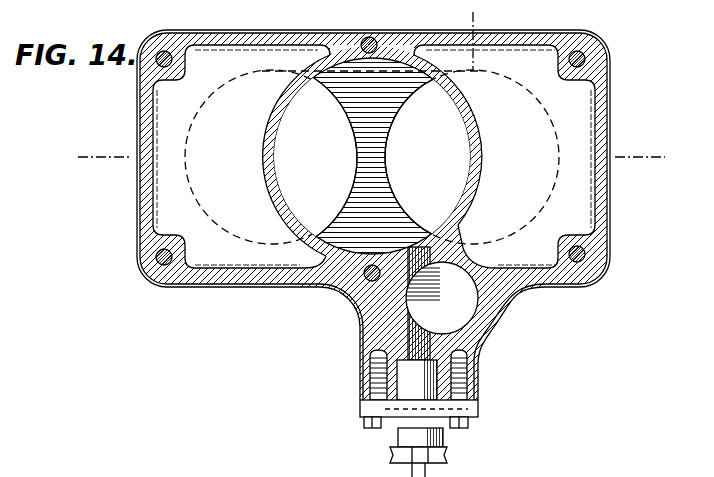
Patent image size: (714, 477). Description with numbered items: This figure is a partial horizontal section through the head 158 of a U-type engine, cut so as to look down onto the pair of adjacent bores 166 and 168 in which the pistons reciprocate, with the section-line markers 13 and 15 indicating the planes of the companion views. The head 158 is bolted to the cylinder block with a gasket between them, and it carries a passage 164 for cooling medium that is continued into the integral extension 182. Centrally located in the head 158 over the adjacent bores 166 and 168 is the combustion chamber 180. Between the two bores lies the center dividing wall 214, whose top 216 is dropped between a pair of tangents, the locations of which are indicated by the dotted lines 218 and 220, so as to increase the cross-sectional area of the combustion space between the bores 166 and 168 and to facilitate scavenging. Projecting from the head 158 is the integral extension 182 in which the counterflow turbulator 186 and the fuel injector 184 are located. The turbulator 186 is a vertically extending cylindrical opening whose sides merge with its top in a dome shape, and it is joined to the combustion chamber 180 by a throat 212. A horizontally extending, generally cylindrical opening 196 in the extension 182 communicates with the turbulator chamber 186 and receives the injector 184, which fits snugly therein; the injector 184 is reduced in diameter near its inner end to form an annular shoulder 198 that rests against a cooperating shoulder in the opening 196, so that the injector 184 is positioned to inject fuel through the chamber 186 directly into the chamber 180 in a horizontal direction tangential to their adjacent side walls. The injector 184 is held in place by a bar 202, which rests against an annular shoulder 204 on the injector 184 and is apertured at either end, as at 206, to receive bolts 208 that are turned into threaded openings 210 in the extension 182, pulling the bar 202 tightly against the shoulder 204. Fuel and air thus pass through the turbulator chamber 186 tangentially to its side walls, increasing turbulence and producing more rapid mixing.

The section line 13- 13 is at (101, 170).
The section line 15- 15 is at (488, 17).
The head 158 is at (406, 215).
The passage 164 is at (170, 98).
The bore 166 is at (293, 147).
The bore 168 is at (483, 140).
The combustion chamber 180 is at (357, 237).
The integral extension 182 is at (476, 324).
The fuel injector 184 is at (440, 437).
The counterflow turbulator 186 is at (489, 332).
The cylindrical opening 196 is at (478, 347).
The annular shoulder 198 is at (398, 352).
The bar 202 is at (360, 409).
The annular shoulder 204 is at (405, 403).
The aperture 206 is at (418, 413).
The bolt 208 is at (367, 425).
The threaded opening 210 is at (368, 372).
The throat 212 is at (422, 247).
The center dividing wall 214 is at (382, 203).
The top of center dividing wall 216 is at (380, 152).
The dotted line 218 is at (291, 252).
The dotted line 220 is at (350, 73).